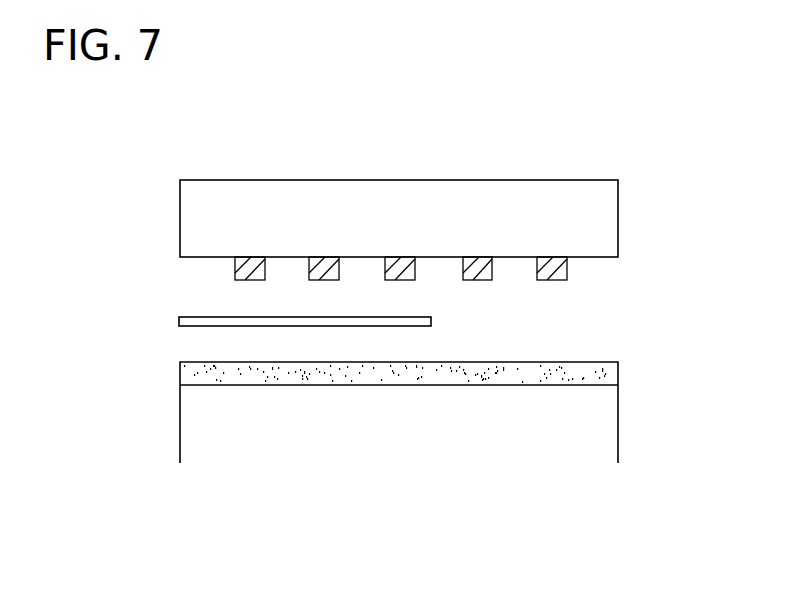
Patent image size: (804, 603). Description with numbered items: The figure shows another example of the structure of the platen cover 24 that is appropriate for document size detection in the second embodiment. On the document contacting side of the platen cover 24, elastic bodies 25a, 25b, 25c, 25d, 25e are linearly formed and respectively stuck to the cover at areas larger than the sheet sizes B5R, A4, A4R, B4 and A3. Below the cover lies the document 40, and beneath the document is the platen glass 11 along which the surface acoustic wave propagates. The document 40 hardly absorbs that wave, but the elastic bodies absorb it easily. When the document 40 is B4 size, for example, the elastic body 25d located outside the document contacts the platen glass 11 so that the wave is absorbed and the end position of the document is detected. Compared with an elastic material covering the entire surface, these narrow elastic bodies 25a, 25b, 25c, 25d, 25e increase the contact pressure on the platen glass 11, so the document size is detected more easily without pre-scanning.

The platen cover 24 is at (502, 180).
The elastic body 25a is at (241, 280).
The elastic body 25b is at (315, 280).
The elastic body 25c is at (391, 280).
The elastic body 25d is at (469, 280).
The elastic body 25e is at (543, 280).
The document 40 is at (431, 321).
The platen glass 11 is at (605, 372).